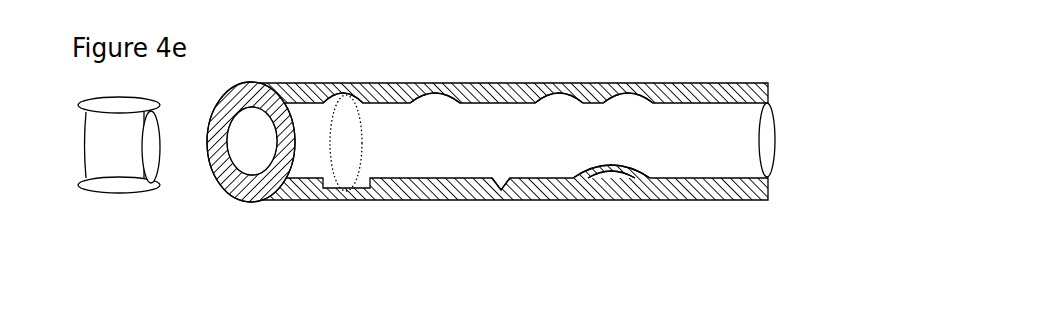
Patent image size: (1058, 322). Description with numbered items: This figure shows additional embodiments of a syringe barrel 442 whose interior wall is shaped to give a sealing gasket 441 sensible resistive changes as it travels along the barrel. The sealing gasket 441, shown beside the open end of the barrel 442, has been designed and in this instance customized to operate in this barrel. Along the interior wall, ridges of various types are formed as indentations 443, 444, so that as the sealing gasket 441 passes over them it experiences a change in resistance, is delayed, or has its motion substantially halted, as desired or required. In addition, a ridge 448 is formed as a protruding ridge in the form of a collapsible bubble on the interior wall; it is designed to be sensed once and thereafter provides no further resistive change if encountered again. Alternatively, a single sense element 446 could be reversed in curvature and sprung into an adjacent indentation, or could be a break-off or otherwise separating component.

The sealing gasket 441 is at (140, 107).
The syringe barrel 442 is at (667, 83).
The indentations 443 is at (598, 83).
The indentation 444 is at (321, 196).
The single sense element 446 is at (486, 198).
The protruding ridge 448 is at (621, 191).